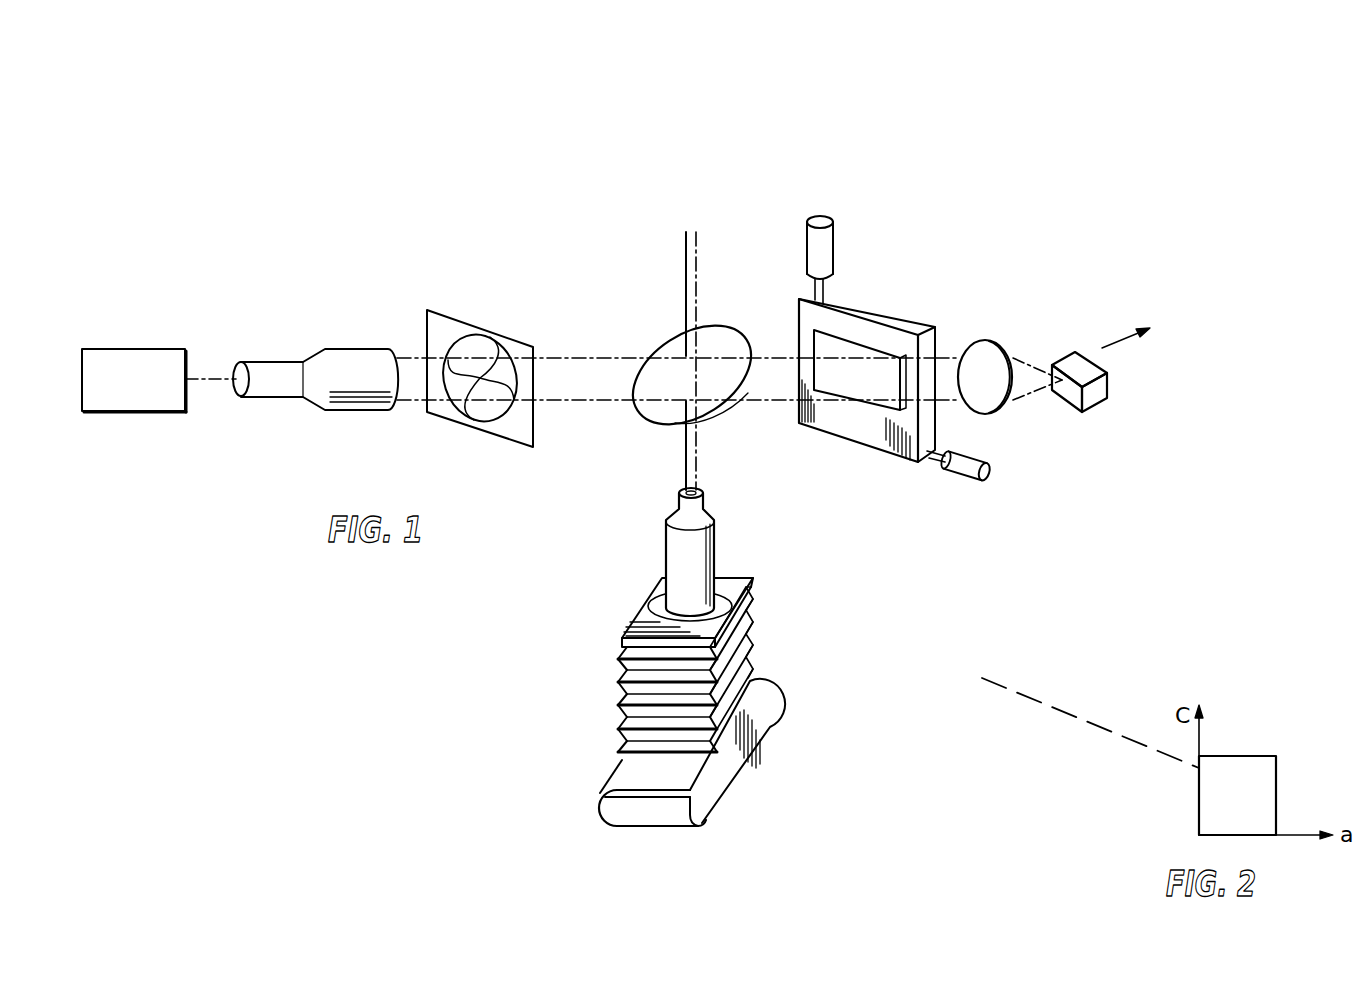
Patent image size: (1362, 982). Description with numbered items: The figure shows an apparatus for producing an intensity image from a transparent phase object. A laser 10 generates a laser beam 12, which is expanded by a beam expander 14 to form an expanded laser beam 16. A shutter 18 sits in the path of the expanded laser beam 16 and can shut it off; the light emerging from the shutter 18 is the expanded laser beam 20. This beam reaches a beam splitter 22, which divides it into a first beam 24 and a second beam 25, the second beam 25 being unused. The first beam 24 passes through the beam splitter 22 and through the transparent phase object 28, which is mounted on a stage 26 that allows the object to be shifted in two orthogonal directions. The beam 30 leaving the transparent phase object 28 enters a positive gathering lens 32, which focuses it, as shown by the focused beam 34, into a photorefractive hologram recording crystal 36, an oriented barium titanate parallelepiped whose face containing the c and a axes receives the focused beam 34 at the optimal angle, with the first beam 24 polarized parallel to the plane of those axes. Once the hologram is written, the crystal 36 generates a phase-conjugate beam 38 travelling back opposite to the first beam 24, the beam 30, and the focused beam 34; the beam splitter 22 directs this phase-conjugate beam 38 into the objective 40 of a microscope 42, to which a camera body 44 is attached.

In FIG. 1, the laser 10 is at (150, 349).
In FIG. 1, the laser beam 12 is at (209, 376).
In FIG. 1, the beam expander 14 is at (360, 348).
In FIG. 1, the expanded laser beam 16 is at (403, 356).
In FIG. 1, the shutter 18 is at (468, 325).
In FIG. 1, the expanded laser beam 20 is at (582, 357).
In FIG. 1, the beam splitter 22 is at (736, 336).
In FIG. 1, the first beam 24 is at (792, 357).
In FIG. 1, the second beam 25 is at (699, 259).
In FIG. 1, the stage 26 is at (855, 297).
In FIG. 1, the transparent phase object 28 is at (889, 411).
In FIG. 1, the beam 30 is at (960, 354).
In FIG. 1, the positive gathering lens 32 is at (1008, 350).
In FIG. 1, the focused beam 34 is at (1046, 372).
In FIG. 2, the focused beam 34 is at (1046, 700).
In FIG. 1, the photorefractive hologram recording crystal 36 is at (1108, 391).
In FIG. 2, the photorefractive hologram recording crystal 36 is at (1238, 755).
In FIG. 1, the phase-conjugate beam 38 is at (685, 451).
In FIG. 1, the objective 40 is at (708, 548).
In FIG. 1, the microscope 42 is at (752, 648).
In FIG. 1, the camera body 44 is at (774, 719).